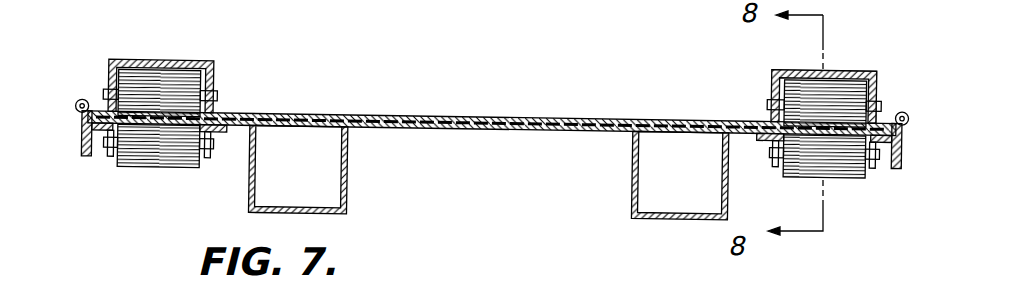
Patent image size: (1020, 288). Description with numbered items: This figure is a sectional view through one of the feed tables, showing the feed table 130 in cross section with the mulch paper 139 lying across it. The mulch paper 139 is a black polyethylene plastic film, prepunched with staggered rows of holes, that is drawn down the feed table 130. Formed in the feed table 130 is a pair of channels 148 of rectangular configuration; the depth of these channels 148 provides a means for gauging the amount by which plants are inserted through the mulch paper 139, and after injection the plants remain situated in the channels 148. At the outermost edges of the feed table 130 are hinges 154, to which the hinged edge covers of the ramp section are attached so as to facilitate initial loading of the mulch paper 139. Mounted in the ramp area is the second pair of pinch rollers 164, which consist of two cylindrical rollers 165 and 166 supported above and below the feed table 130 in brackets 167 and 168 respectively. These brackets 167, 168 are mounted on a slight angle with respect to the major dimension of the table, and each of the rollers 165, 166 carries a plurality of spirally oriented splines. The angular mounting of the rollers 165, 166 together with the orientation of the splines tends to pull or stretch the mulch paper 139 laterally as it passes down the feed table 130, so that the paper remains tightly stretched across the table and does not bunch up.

The feed table 130 is at (518, 78).
The mulch paper 139 is at (298, 119).
The channels 148 is at (333, 183).
The hinges 154 is at (83, 100).
The second pair of pinch rollers 164 is at (751, 92).
The cylindrical roller 165 is at (172, 88).
The cylindrical roller 166 is at (153, 166).
The bracket 167 is at (212, 74).
The bracket 168 is at (110, 158).